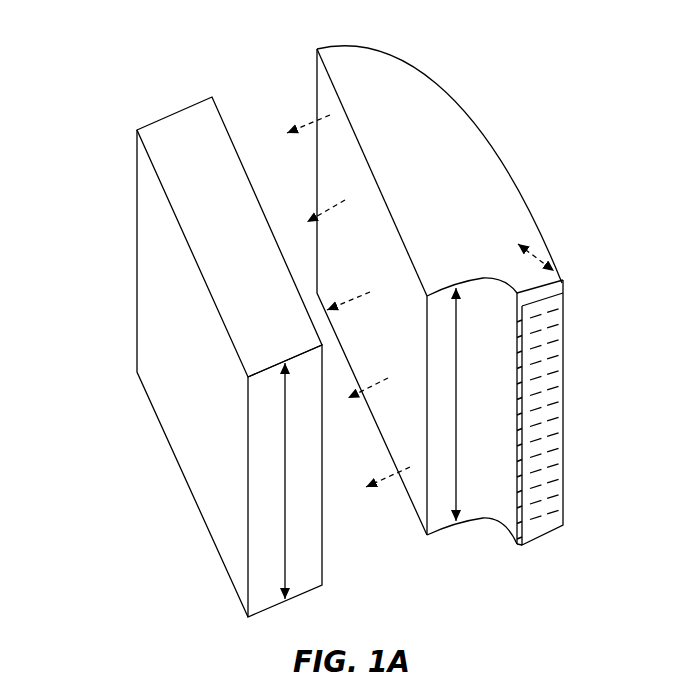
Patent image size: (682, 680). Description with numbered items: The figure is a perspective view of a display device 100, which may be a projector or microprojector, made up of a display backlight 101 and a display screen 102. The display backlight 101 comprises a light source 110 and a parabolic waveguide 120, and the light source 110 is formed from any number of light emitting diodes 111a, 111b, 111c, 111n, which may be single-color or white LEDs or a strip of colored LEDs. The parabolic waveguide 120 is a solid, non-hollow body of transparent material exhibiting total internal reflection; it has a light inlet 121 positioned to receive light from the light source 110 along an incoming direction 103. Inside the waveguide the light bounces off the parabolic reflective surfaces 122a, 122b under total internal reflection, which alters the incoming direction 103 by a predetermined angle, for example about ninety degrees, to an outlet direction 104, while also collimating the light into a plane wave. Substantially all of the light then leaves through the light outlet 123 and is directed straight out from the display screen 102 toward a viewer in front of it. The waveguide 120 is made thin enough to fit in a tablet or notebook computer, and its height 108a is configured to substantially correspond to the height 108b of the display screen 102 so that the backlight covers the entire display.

The display device 100 is at (168, 54).
The display backlight 101 is at (510, 67).
The display screen 102 is at (117, 172).
The incoming direction 103 is at (546, 259).
The outlet direction 104 is at (378, 381).
The height of the waveguide 108a is at (457, 473).
The height of the display screen 108b is at (285, 540).
The light source 110 is at (593, 394).
The light emitting diode 111a is at (566, 289).
The light emitting diode 111b is at (566, 310).
The light emitting diode 111c is at (566, 330).
The light emitting diode 111n is at (567, 517).
The parabolic waveguide 120 is at (467, 295).
The light inlet 121 is at (556, 273).
The parabolic reflective surface 122a is at (477, 130).
The parabolic reflective surface 122b is at (490, 284).
The light outlet 123 is at (298, 91).